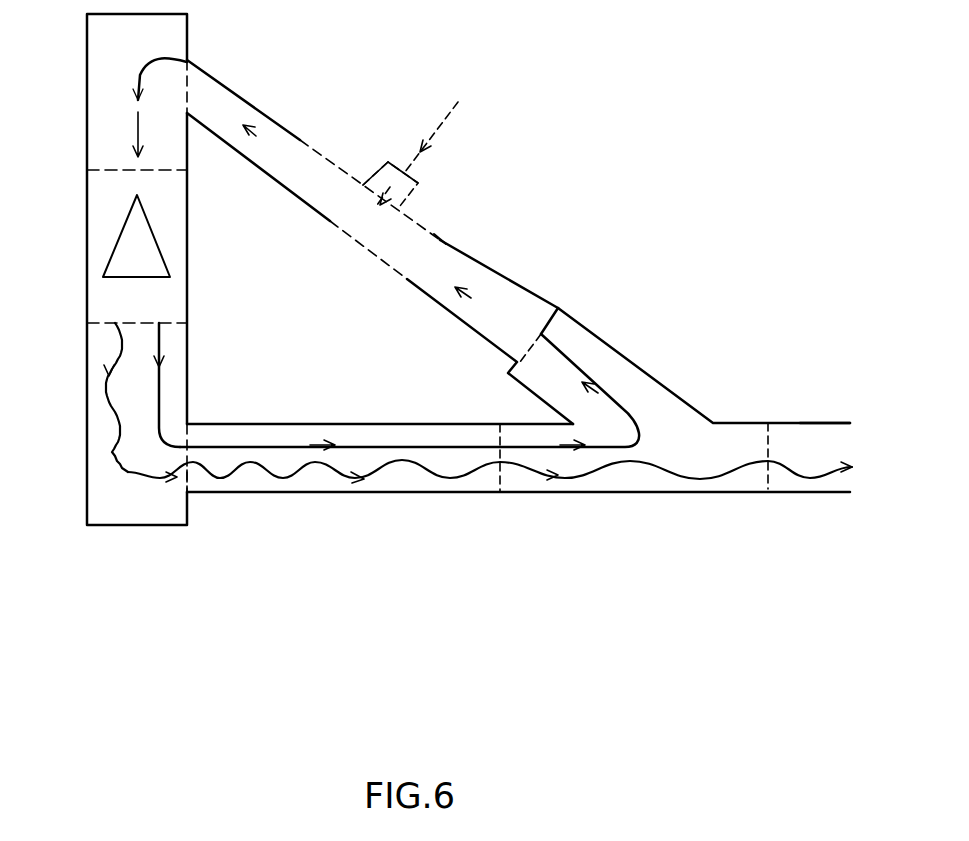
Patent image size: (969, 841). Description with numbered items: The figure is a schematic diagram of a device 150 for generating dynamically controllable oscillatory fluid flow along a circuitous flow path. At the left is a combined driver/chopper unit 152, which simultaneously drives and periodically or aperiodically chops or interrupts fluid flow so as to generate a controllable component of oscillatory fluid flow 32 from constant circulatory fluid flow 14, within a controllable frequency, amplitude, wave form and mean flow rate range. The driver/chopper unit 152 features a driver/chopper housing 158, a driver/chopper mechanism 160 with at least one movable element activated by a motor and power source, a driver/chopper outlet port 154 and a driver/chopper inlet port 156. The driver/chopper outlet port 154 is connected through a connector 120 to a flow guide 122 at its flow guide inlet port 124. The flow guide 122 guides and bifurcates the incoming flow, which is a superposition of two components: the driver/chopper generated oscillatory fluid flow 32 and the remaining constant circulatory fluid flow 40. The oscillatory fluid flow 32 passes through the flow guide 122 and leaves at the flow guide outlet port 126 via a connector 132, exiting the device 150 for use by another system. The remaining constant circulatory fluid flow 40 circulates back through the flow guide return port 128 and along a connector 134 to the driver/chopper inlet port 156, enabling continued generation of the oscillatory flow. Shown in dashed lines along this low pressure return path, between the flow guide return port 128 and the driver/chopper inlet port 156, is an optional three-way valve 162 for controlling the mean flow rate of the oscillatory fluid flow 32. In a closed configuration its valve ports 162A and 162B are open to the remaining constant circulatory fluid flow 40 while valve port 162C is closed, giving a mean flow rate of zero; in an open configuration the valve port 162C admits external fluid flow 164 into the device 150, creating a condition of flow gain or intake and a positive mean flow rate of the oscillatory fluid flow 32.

The constant circulatory fluid flow 14 is at (137, 124).
The oscillatory fluid flow 32 is at (112, 462).
The remaining constant circulatory fluid flow 40 is at (224, 110).
The connector 120 is at (290, 424).
The flow guide 122 is at (655, 384).
The flow guide inlet port 124 is at (500, 427).
The flow guide outlet port 126 is at (768, 450).
The flow guide return port 128 is at (541, 332).
The connector 132 is at (812, 423).
The connector 134 is at (280, 124).
The device 150 is at (711, 640).
The driver/chopper unit 152 is at (104, 269).
The driver/chopper outlet port 154 is at (187, 477).
The driver/chopper inlet port 156 is at (187, 72).
The driver/chopper housing 158 is at (187, 250).
The driver/chopper mechanism 160 is at (136, 236).
The three-way valve 162 is at (374, 258).
The valve port 162A is at (438, 238).
The valve port 162B is at (318, 178).
The valve port 162C is at (415, 185).
The external fluid flow 164 is at (438, 144).